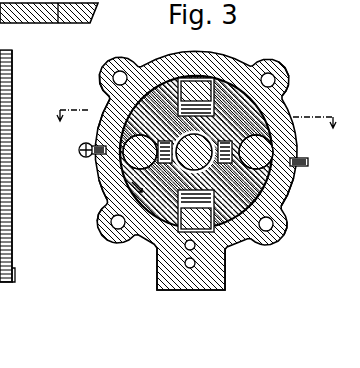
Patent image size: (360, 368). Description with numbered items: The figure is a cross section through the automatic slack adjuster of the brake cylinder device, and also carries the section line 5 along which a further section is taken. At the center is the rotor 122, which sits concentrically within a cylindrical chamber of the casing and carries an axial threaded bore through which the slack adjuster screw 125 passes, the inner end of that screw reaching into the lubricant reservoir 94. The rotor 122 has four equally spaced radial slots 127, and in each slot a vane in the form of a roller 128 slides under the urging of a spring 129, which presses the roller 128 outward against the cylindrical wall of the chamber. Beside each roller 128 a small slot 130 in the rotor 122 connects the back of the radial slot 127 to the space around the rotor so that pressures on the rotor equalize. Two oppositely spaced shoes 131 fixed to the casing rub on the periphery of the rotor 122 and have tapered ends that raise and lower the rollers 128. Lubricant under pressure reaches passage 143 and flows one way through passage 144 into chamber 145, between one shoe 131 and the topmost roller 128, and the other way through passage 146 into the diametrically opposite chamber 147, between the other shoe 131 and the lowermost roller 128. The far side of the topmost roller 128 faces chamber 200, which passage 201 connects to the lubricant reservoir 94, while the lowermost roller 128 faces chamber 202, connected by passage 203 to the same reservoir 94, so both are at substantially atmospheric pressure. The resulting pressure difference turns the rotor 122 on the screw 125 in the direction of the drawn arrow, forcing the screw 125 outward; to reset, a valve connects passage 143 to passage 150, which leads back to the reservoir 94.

The section line 5— 5 is at (195, 109).
The lubricant reservoir 94 is at (10, 226).
The rotor 122 is at (258, 107).
The slack adjuster screw 125 is at (10, 204).
The radial slots 127 is at (150, 88).
The rollers 128 is at (215, 88).
The spring 129 is at (211, 167).
The slot 130 is at (232, 105).
The shoes 131 is at (102, 140).
The passage 143 is at (166, 270).
The passage 144 is at (290, 108).
The chamber 145 is at (292, 83).
The passage 146 is at (107, 188).
The chamber 147 is at (106, 212).
The passage 150 is at (184, 250).
The chamber 200 is at (145, 78).
The passage 201 is at (102, 97).
The chamber 202 is at (281, 222).
The passage 203 is at (284, 203).